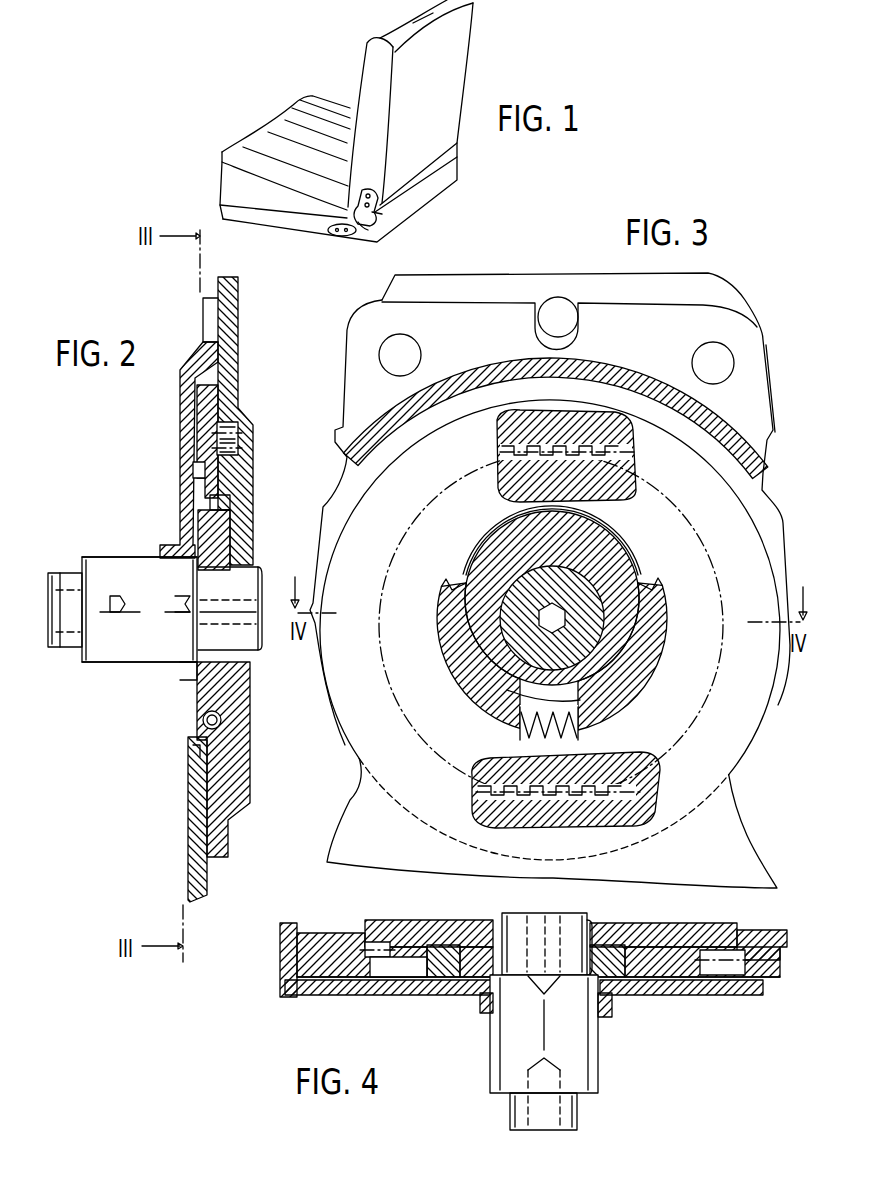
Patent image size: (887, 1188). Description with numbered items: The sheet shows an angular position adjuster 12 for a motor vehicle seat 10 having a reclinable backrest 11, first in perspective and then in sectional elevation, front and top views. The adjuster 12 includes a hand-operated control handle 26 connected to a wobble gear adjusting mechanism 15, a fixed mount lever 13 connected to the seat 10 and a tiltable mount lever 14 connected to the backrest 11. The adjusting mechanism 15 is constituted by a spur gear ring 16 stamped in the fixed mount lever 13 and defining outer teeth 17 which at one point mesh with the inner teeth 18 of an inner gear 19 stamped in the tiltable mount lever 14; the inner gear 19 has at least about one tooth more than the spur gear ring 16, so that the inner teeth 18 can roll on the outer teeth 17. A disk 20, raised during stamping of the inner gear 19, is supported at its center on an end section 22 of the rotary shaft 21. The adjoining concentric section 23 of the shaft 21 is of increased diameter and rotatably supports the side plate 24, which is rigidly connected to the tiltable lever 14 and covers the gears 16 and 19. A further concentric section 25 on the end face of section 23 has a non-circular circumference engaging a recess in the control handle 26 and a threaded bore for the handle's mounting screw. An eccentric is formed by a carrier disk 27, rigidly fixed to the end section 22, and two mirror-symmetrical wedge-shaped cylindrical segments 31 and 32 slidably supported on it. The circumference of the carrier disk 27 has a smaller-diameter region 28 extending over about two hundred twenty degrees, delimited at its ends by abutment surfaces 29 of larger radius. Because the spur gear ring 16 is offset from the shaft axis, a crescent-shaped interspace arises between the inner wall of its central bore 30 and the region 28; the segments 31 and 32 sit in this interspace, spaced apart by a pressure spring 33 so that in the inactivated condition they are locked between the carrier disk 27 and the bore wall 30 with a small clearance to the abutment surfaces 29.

In FIG. 1, the motor vehicle seat 10 is at (235, 147).
In FIG. 1, the reclinable backrest 11 is at (445, 73).
In FIG. 1, the angular position adjuster 12 is at (378, 215).
In FIG. 1, the fixed mount lever 13 is at (338, 238).
In FIG. 2, the fixed mount lever 13 is at (197, 825).
In FIG. 3, the fixed mount lever 13 is at (363, 833).
In FIG. 4, the fixed mount lever 13 is at (742, 978).
In FIG. 1, the tiltable mount lever 14 is at (372, 200).
In FIG. 2, the tiltable mount lever 14 is at (217, 353).
In FIG. 3, the tiltable mount lever 14 is at (483, 287).
In FIG. 2, the wobble gear adjusting mechanism 15 is at (136, 535).
In FIG. 2, the spur gear ring 16 is at (210, 473).
In FIG. 4, the spur gear ring 16 is at (405, 953).
In FIG. 2, the outer teeth 17 is at (237, 450).
In FIG. 3, the outer teeth 17 is at (533, 475).
In FIG. 2, the inner teeth 18 is at (236, 425).
In FIG. 3, the inner teeth 18 is at (527, 433).
In FIG. 2, the inner gear 19 is at (225, 403).
In FIG. 3, the inner gear 19 is at (566, 790).
In FIG. 4, the inner gear 19 is at (338, 943).
In FIG. 2, the disk 20 is at (242, 712).
In FIG. 4, the disk 20 is at (488, 914).
In FIG. 2, the rotary shaft 21 is at (130, 658).
In FIG. 4, the rotary shaft 21 is at (570, 914).
In FIG. 2, the end section 22 is at (250, 573).
In FIG. 3, the end section 22 is at (583, 583).
In FIG. 4, the end section 22 is at (588, 977).
In FIG. 2, the concentric section 23 is at (103, 557).
In FIG. 4, the concentric section 23 is at (582, 1052).
In FIG. 2, the side plate 24 is at (182, 418).
In FIG. 3, the side plate 24 is at (597, 362).
In FIG. 4, the side plate 24 is at (341, 995).
In FIG. 2, the concentric section 25 is at (72, 648).
In FIG. 4, the concentric section 25 is at (513, 1107).
In FIG. 1, the control handle 26 is at (363, 232).
In FIG. 2, the carrier disk 27 is at (228, 530).
In FIG. 3, the carrier disk 27 is at (493, 552).
In FIG. 4, the carrier disk 27 is at (477, 964).
In FIG. 3, the circumferential region 28 is at (607, 704).
In FIG. 3, the abutment surfaces 29 is at (446, 578).
In FIG. 2, the central bore 30 is at (243, 490).
In FIG. 3, the central bore 30 is at (615, 528).
In FIG. 3, the wedge-shaped cylindrical segment 31 is at (465, 679).
In FIG. 4, the wedge-shaped cylindrical segment 31 is at (448, 943).
In FIG. 3, the wedge-shaped cylindrical segment 32 is at (640, 660).
In FIG. 4, the wedge-shaped cylindrical segment 32 is at (647, 952).
In FIG. 2, the pressure spring 33 is at (227, 728).
In FIG. 3, the pressure spring 33 is at (527, 738).